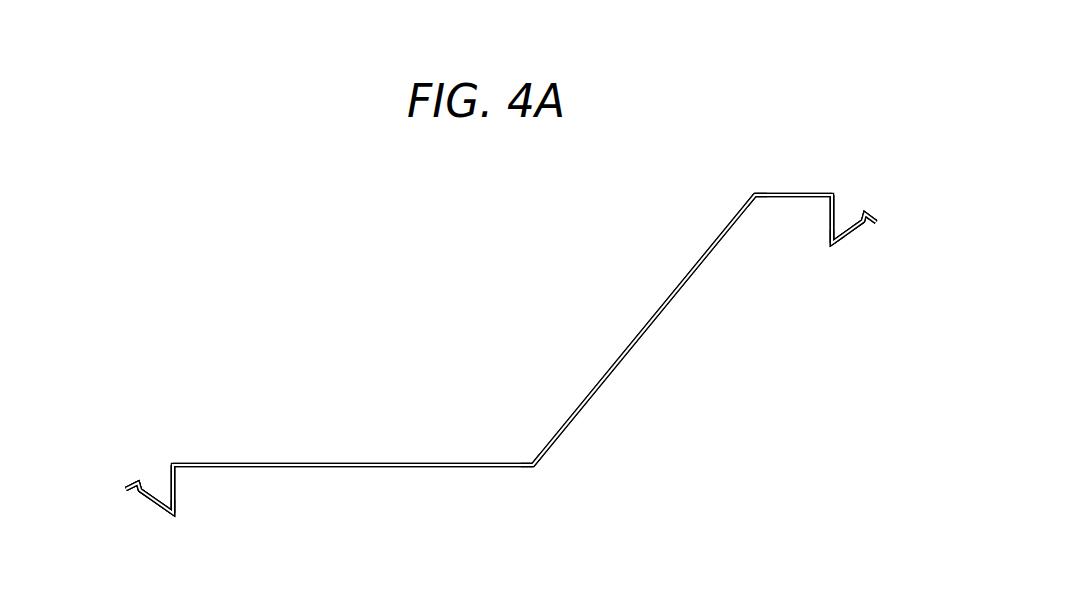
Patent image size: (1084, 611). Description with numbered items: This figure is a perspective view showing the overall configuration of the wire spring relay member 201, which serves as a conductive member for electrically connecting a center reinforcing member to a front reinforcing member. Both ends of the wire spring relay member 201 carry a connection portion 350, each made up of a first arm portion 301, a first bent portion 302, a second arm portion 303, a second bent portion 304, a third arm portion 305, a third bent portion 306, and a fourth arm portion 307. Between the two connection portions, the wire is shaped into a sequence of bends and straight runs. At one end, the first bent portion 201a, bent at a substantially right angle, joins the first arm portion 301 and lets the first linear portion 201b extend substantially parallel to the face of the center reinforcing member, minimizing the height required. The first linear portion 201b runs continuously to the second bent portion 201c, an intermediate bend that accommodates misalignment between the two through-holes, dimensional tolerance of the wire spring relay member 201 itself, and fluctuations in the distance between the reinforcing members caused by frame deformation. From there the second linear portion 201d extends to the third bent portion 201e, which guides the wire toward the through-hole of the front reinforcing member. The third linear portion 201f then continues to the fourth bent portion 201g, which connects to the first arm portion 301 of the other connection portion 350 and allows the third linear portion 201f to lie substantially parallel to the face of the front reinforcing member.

The wire spring relay member 201 is at (528, 338).
The first bent portion 201a is at (173, 465).
The first linear portion 201b is at (398, 463).
The second bent portion 201c is at (535, 468).
The second linear portion 201d is at (648, 333).
The third bent portion 201e is at (755, 195).
The third linear portion 201f is at (787, 193).
The fourth bent portion 201g is at (832, 190).
The first arm portion 301 is at (177, 485).
The first bent portion 302 is at (174, 514).
The second arm portion 303 is at (155, 510).
The second bent portion 304 is at (137, 497).
The third arm portion 305 is at (137, 488).
The third bent portion 306 is at (140, 483).
The fourth arm portion 307 is at (131, 487).
The connection portion 350 is at (247, 532).